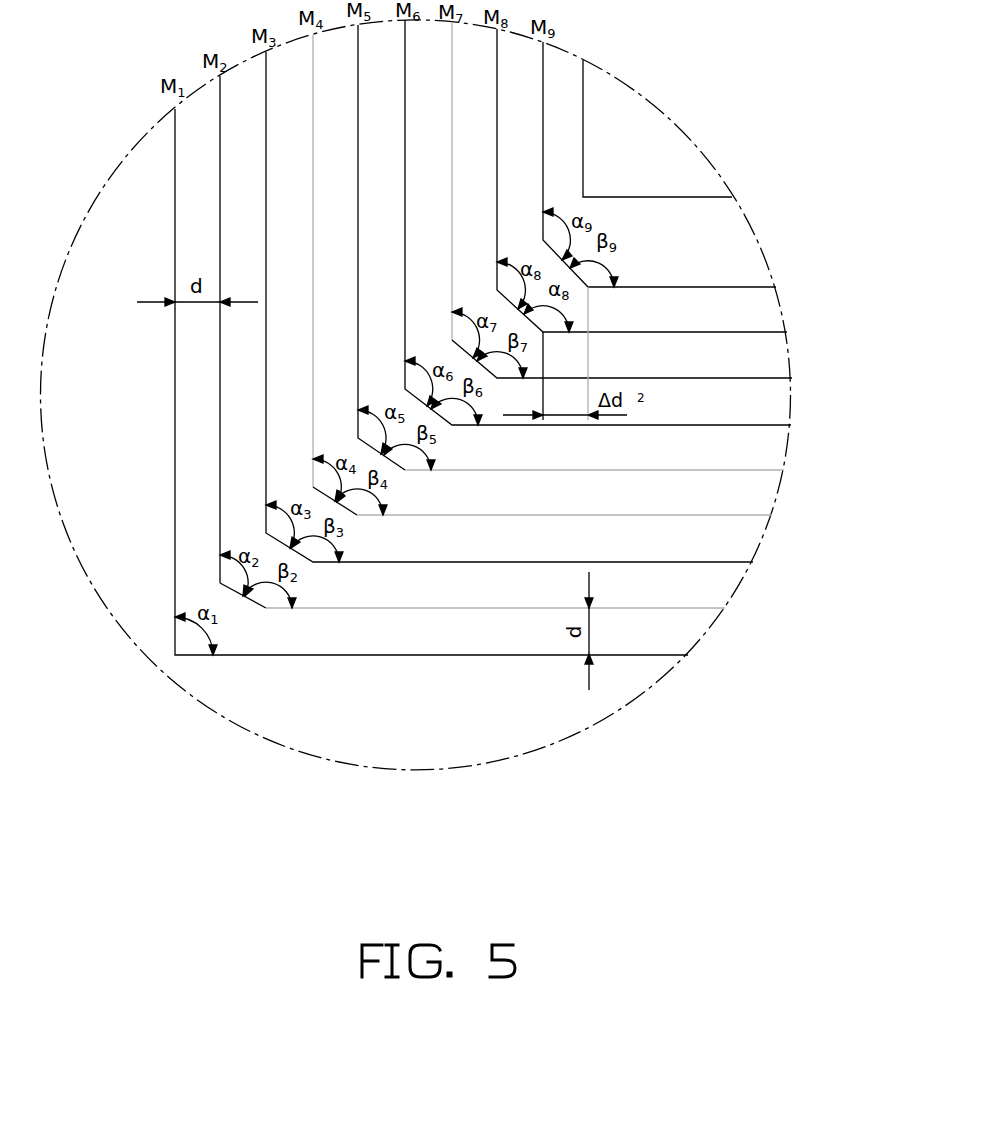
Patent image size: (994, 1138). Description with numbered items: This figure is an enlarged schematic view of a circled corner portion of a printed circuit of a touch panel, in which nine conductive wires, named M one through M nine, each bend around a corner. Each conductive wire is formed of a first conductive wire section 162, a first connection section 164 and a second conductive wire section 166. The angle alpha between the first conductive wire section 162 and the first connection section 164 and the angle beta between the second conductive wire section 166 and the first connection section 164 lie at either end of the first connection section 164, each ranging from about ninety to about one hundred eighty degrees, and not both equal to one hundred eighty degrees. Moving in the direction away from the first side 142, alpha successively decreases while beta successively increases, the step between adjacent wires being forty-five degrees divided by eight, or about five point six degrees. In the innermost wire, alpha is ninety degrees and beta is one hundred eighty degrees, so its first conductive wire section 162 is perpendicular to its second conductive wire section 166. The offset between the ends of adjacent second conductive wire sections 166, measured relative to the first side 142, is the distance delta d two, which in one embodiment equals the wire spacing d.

The first side 142 is at (583, 128).
The first conductive wire section 162 is at (213, 508).
The first connection section 164 is at (232, 592).
The second conductive wire section 166 is at (325, 613).